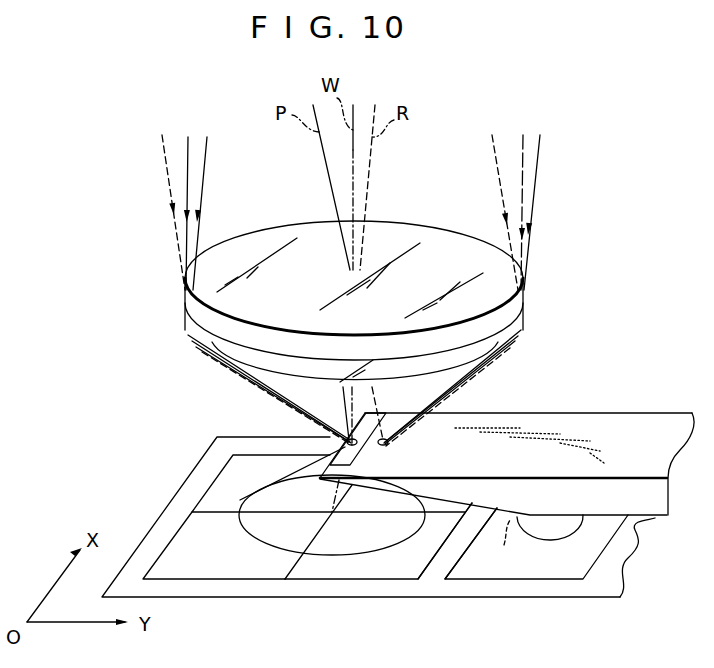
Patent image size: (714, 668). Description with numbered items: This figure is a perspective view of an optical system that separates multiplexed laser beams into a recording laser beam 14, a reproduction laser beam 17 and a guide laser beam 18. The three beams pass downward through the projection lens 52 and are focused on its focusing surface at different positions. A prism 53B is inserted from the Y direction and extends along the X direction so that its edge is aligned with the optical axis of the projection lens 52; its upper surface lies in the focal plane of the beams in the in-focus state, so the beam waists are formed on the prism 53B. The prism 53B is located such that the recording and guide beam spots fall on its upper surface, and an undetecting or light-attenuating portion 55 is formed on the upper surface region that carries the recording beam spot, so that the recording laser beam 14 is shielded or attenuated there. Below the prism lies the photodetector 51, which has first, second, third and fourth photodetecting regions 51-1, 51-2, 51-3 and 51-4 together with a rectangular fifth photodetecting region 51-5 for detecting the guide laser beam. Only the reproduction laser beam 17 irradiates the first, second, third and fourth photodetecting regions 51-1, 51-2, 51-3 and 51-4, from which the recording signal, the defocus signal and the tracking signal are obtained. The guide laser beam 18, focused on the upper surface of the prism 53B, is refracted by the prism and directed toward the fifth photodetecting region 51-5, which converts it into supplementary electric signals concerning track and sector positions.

The recording laser beam 14 is at (187, 183).
The reproduction laser beam 17 is at (204, 166).
The guide laser beam 18 is at (165, 162).
The photodetector 51 is at (508, 590).
The first photodetecting region 51-1 is at (218, 490).
The second photodetecting region 51-2 is at (227, 570).
The third photodetecting region 51-3 is at (363, 572).
The fourth photodetecting region 51-4 is at (440, 505).
The fifth photodetecting region 51-5 is at (570, 568).
The projection lens 52 is at (447, 242).
The prism 53B is at (583, 418).
The light-attenuating portion 55 is at (357, 452).